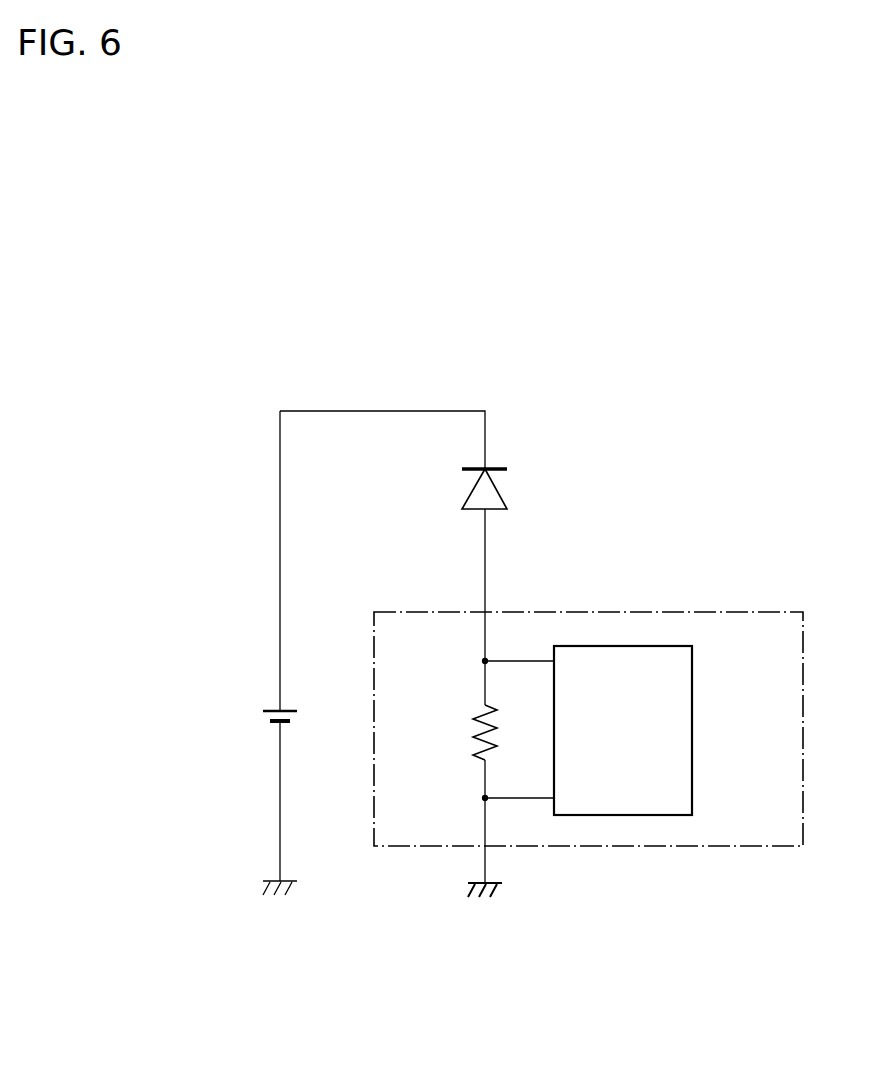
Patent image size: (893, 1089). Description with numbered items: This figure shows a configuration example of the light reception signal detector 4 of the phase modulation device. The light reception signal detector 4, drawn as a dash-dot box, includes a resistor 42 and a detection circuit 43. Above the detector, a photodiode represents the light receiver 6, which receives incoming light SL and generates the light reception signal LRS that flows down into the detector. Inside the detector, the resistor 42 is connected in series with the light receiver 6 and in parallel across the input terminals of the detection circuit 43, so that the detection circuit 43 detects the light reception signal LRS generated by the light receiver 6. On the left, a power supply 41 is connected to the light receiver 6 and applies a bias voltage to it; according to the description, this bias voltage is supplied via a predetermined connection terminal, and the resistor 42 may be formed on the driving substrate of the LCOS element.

The light reception signal detector 4 is at (660, 612).
The light receiver 6 is at (470, 492).
The power supply 41 is at (272, 711).
The resistor 42 is at (480, 718).
The detection circuit 43 is at (692, 712).
The light beam SL is at (515, 488).
The light reception signal LRS is at (518, 531).